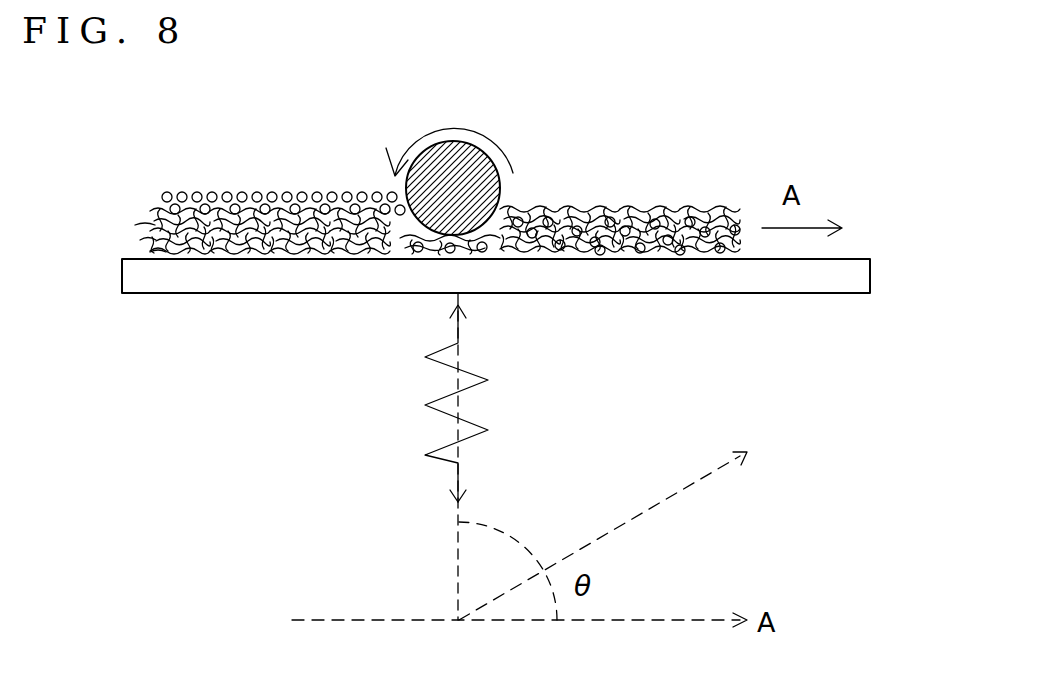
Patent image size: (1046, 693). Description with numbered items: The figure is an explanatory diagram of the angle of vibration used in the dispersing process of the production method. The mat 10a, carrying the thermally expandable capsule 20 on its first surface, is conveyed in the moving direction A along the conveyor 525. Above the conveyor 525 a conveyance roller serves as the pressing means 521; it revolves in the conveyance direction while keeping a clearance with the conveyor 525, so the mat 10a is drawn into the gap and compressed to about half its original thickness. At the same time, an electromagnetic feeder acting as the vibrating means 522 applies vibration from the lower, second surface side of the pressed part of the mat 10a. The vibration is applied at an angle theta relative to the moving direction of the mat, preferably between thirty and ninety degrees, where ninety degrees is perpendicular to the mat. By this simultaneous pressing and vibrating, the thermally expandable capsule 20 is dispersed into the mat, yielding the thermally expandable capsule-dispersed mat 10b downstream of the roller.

The mat 10a is at (145, 227).
The thermally expandable capsule-dispersed mat 10b is at (651, 195).
The thermally expandable capsule 20 is at (242, 192).
The pressing means 521 is at (505, 197).
The vibrating means 522 is at (417, 407).
The conveyor 525 is at (648, 293).